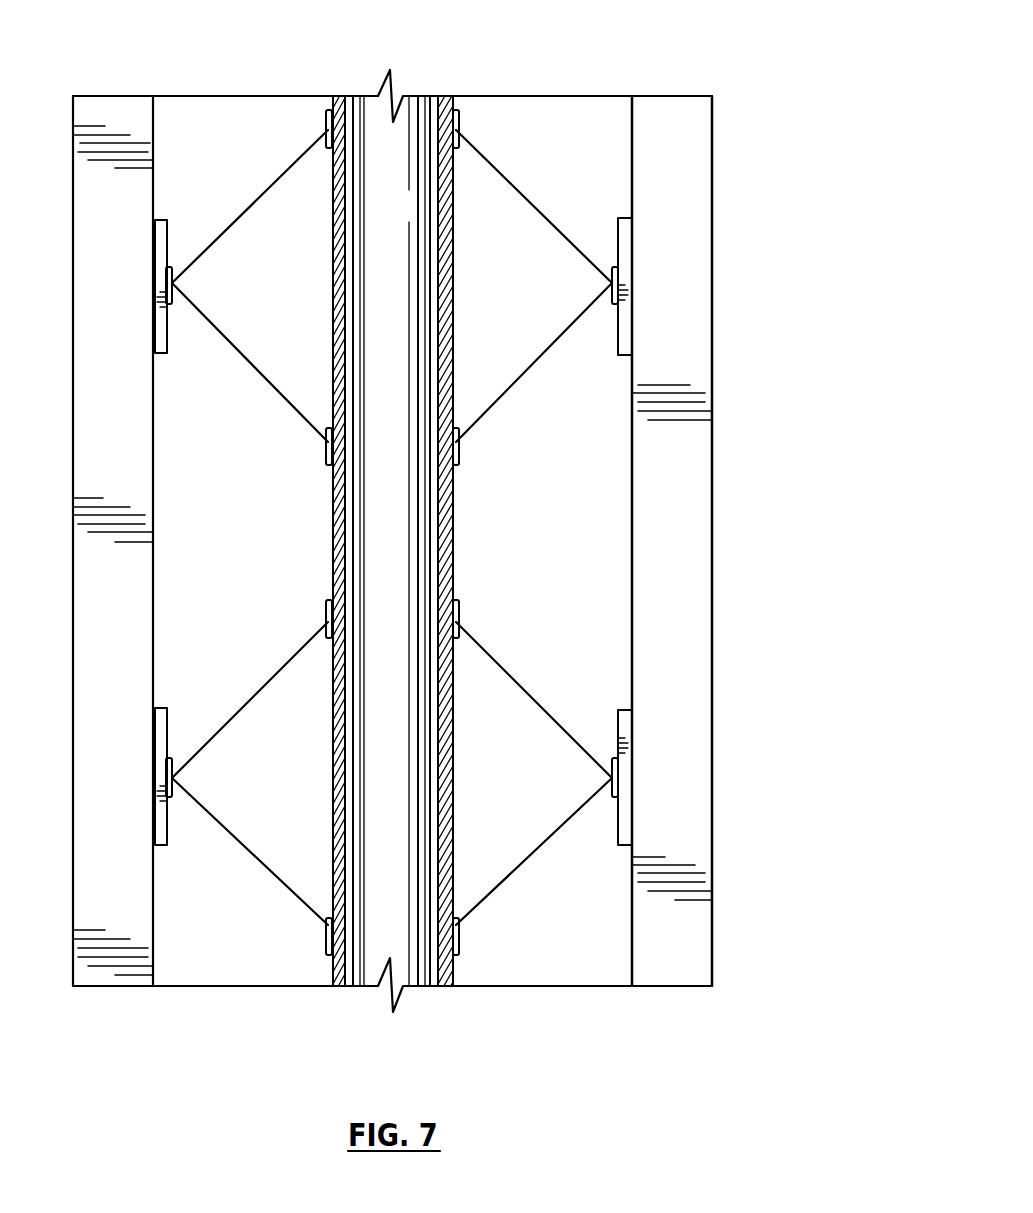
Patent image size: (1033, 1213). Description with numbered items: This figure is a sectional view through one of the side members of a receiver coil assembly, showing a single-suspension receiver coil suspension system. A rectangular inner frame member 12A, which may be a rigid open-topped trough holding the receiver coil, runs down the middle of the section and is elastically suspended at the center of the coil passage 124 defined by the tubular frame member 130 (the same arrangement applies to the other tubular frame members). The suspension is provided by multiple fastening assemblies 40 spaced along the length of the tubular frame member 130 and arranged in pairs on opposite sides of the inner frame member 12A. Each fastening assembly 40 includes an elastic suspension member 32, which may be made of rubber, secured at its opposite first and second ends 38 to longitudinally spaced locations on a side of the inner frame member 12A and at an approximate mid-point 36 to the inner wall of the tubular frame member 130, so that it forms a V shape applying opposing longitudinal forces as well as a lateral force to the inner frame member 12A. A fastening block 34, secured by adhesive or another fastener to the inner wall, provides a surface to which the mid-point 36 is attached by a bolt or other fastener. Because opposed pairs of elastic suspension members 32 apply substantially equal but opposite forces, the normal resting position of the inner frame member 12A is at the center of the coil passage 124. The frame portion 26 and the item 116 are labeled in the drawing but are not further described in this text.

The frame header 26 is at (220, 123).
The elastic suspension member 32 is at (240, 210).
The fastening block 34 is at (166, 356).
The mid-point 36 is at (175, 284).
The first and second ends 38 is at (327, 120).
The fastening assembly 40 is at (245, 437).
The inner frame member 12A is at (455, 238).
The central channel 116 is at (410, 217).
The coil passage 124 is at (253, 931).
The tubular frame member 130 is at (685, 489).